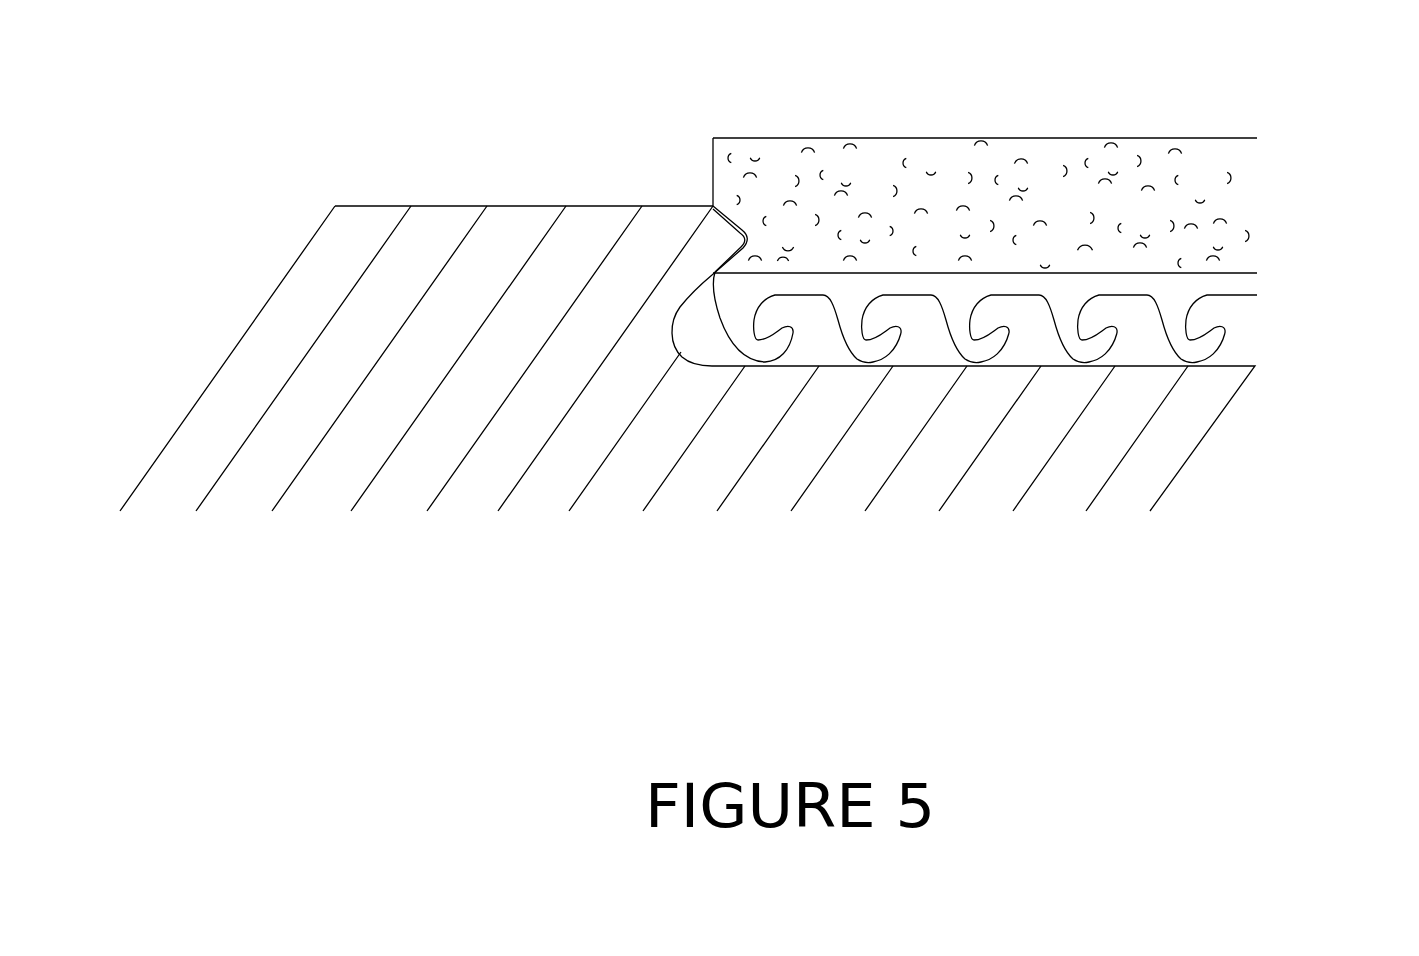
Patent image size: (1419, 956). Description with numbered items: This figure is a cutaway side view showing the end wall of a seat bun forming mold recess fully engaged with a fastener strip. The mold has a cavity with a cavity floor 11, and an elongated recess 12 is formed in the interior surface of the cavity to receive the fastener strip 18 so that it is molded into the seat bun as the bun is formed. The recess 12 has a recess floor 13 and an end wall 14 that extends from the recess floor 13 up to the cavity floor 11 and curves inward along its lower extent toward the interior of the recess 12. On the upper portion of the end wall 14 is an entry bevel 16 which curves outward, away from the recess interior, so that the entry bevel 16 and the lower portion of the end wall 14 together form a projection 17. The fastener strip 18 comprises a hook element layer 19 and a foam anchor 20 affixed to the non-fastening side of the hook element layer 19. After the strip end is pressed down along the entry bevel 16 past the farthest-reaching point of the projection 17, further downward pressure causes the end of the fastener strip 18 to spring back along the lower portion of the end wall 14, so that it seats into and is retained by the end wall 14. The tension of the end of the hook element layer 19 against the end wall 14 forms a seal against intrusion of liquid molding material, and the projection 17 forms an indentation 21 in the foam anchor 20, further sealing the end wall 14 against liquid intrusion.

The cavity floor 11 is at (445, 194).
The elongated recess 12 is at (1283, 333).
The recess floor 13 is at (1217, 378).
The end wall 14 is at (663, 313).
The entry bevel 16 is at (717, 218).
The projection 17 is at (737, 239).
The fastener strip 18 is at (1268, 254).
The hook element layer 19 is at (960, 297).
The foam anchor 20 is at (990, 136).
The indentation 21 is at (748, 212).